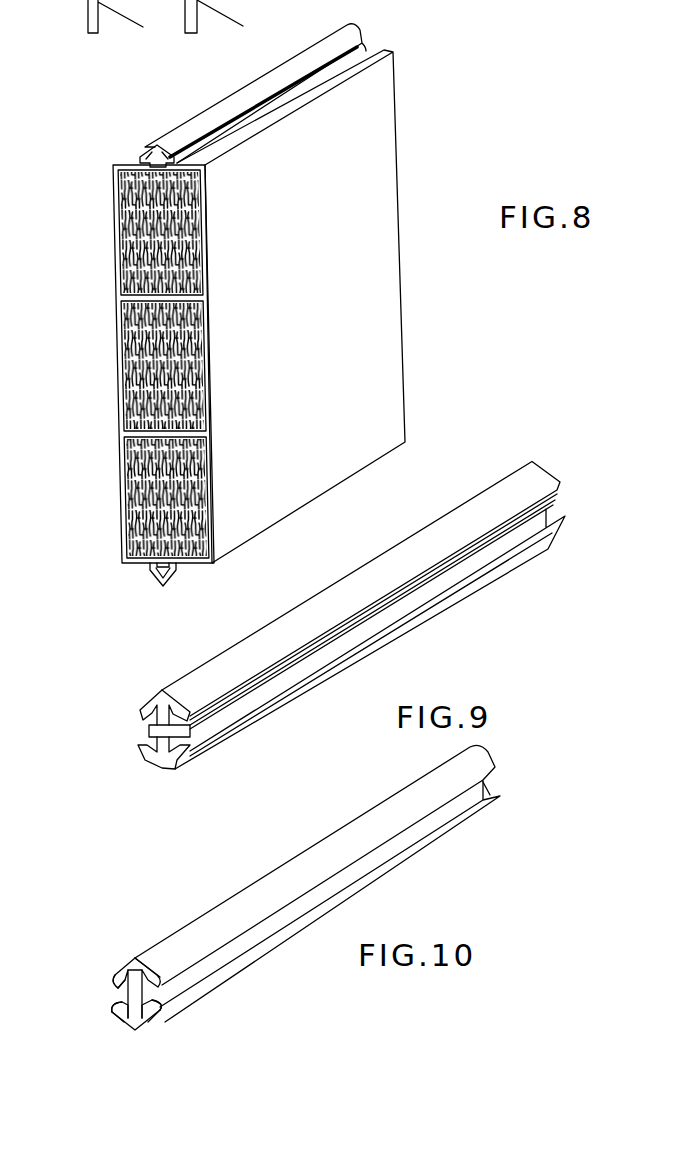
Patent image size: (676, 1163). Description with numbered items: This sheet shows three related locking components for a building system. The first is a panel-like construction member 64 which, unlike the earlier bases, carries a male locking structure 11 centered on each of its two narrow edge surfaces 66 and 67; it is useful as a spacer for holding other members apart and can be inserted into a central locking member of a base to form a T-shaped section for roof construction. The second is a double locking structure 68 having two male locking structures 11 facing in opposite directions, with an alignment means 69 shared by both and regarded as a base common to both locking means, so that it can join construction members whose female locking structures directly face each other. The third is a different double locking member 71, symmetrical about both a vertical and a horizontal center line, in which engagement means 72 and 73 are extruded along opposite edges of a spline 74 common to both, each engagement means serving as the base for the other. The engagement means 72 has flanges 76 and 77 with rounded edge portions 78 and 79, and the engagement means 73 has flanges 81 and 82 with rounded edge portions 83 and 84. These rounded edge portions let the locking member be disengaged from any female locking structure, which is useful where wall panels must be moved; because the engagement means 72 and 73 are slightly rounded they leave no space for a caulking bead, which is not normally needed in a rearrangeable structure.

In FIG. 8, the male locking structure 11 is at (358, 35).
In FIG. 9, the male locking structure 11 is at (153, 697).
In FIG. 8, the construction member 64 is at (406, 342).
In FIG. 8, the narrow edge surface 66 is at (128, 160).
In FIG. 8, the narrow edge surface 67 is at (132, 568).
In FIG. 8, the double locking structure 68 is at (551, 462).
In FIG. 9, the alignment means 69 is at (148, 731).
In FIG. 10, the double locking member 71 is at (287, 857).
In FIG. 10, the engagement means 72 is at (130, 955).
In FIG. 10, the engagement means 73 is at (125, 1034).
In FIG. 10, the spline 74 is at (486, 791).
In FIG. 10, the flange 76 is at (117, 982).
In FIG. 10, the flange 77 is at (148, 966).
In FIG. 10, the rounded edge portion 78 is at (113, 989).
In FIG. 10, the rounded edge portion 79 is at (170, 972).
In FIG. 10, the flange 81 is at (121, 1025).
In FIG. 10, the flange 82 is at (152, 1022).
In FIG. 10, the rounded edge portion 83 is at (112, 1005).
In FIG. 10, the rounded edge portion 84 is at (162, 1010).